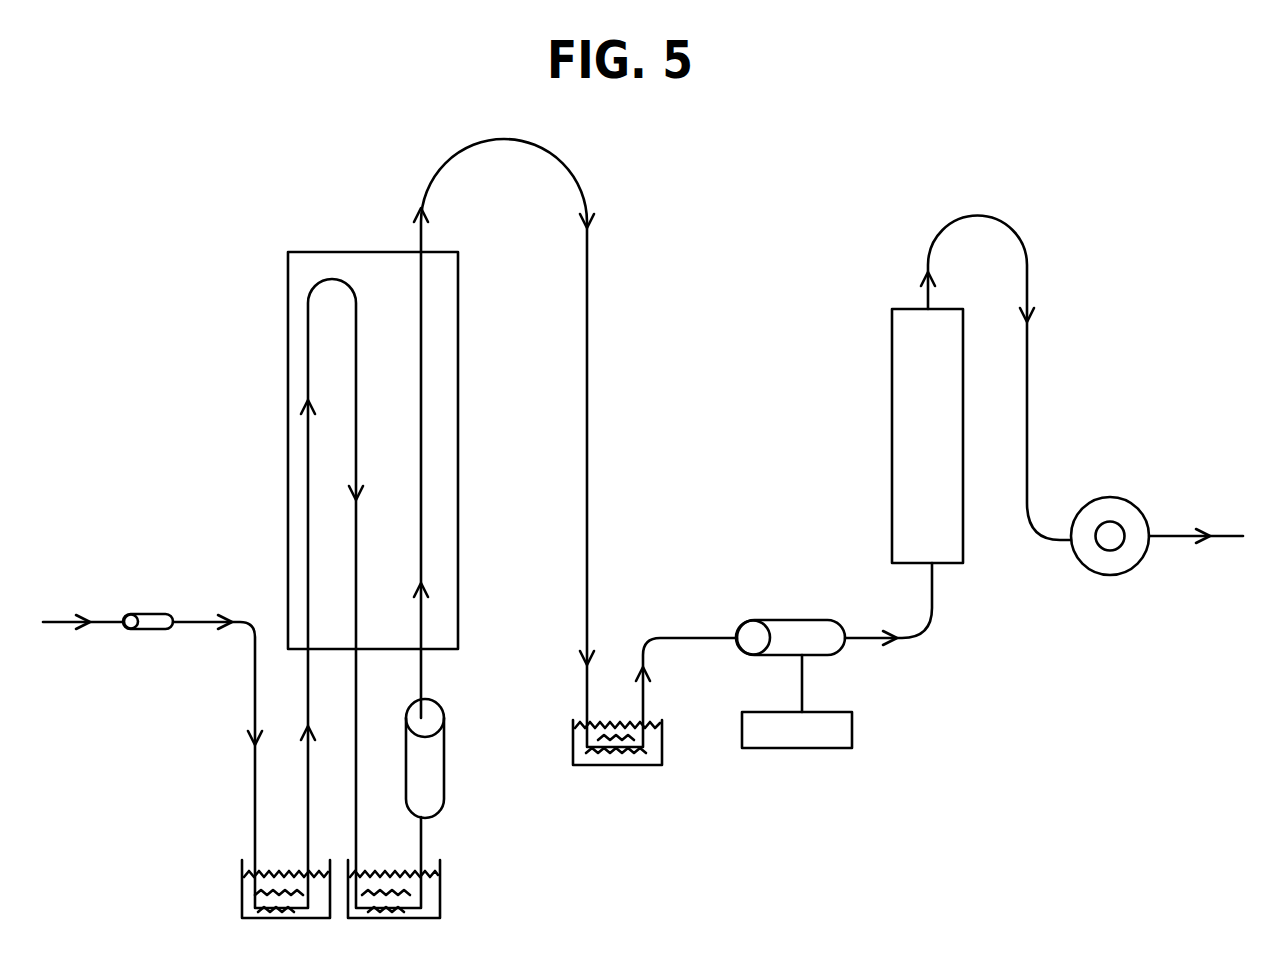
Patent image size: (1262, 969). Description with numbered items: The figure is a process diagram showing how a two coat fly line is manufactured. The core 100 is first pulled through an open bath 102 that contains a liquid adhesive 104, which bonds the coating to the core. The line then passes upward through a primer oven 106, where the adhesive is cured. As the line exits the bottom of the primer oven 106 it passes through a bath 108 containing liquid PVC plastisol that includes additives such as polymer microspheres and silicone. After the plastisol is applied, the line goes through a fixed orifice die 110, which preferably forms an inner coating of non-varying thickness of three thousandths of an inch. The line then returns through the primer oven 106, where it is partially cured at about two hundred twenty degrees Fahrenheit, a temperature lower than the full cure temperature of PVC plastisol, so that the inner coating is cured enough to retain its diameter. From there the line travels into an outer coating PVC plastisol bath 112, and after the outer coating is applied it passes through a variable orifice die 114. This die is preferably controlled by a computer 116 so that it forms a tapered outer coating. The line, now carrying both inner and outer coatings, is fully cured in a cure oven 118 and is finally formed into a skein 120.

The core 100 is at (145, 617).
The open bath 102 is at (285, 890).
The liquid adhesive 104 is at (237, 905).
The primer oven 106 is at (380, 277).
The bath 108 is at (395, 890).
The fixed orifice die 110 is at (428, 770).
The outer coating PVC plastisol bath 112 is at (618, 752).
The variable orifice die 114 is at (800, 638).
The computer 116 is at (840, 732).
The cure oven 118 is at (915, 348).
The skein 120 is at (1125, 500).